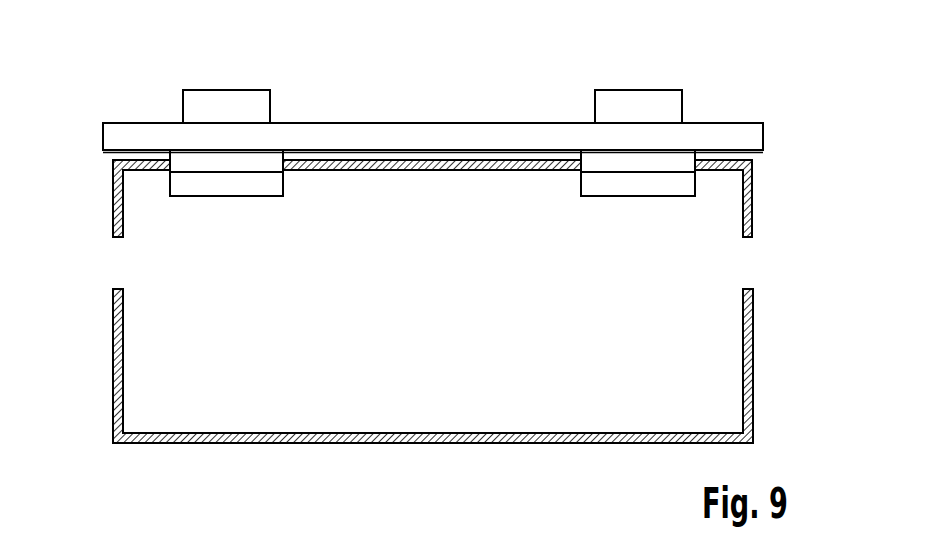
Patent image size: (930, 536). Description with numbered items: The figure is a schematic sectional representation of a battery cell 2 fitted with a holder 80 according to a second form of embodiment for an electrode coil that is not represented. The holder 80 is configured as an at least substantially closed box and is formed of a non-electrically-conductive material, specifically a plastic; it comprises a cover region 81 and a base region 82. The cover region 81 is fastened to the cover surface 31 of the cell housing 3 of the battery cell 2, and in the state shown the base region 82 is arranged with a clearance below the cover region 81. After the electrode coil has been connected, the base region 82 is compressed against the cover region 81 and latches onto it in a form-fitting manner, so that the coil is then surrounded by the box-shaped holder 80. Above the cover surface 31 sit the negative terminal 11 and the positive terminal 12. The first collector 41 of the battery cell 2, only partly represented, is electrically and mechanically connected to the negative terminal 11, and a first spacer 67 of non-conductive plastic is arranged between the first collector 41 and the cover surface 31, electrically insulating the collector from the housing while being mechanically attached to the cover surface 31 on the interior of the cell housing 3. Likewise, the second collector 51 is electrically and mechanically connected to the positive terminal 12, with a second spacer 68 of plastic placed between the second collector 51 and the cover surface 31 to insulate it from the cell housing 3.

The battery cell 2 is at (121, 63).
The cell housing 3 is at (449, 131).
The cover surface 31 is at (351, 130).
The negative terminal 11 is at (237, 97).
The positive terminal 12 is at (637, 97).
The first spacer 67 is at (275, 155).
The second spacer 68 is at (590, 156).
The first collector 41 is at (182, 183).
The second collector 51 is at (680, 181).
The holder 80 is at (404, 170).
The cover region 81 is at (466, 170).
The base region 82 is at (340, 443).